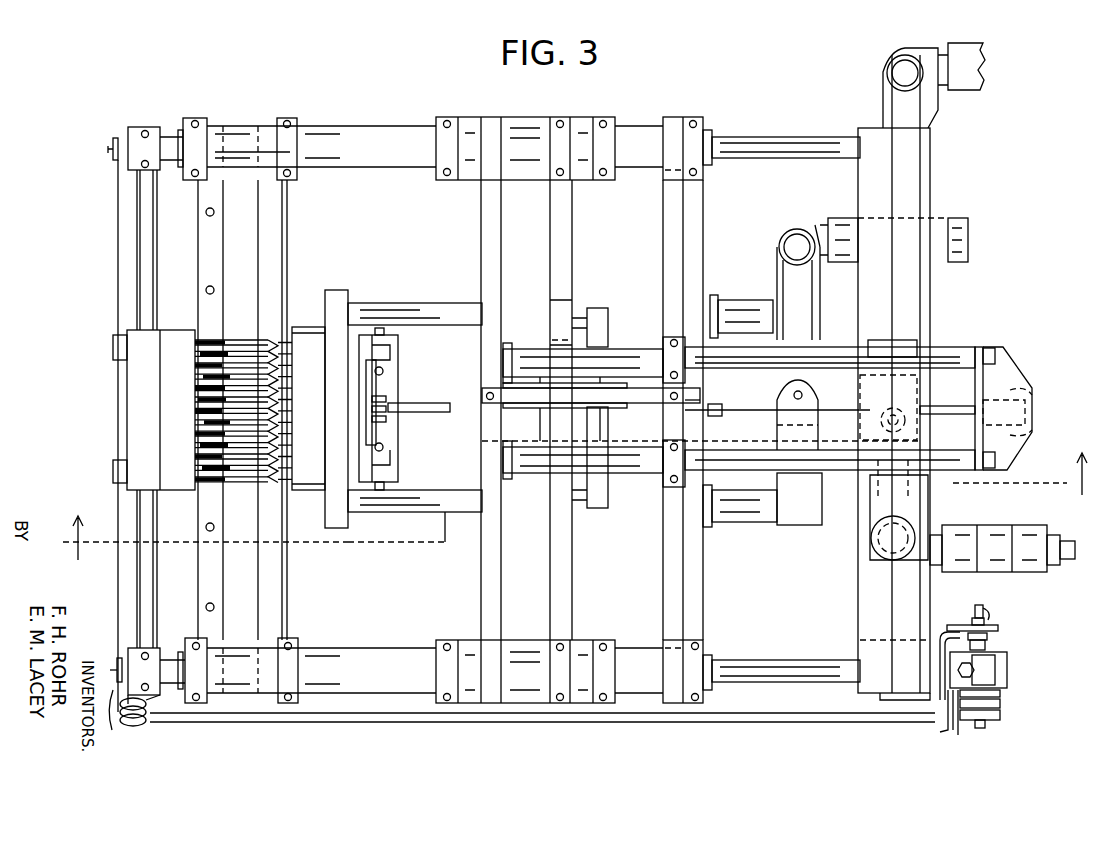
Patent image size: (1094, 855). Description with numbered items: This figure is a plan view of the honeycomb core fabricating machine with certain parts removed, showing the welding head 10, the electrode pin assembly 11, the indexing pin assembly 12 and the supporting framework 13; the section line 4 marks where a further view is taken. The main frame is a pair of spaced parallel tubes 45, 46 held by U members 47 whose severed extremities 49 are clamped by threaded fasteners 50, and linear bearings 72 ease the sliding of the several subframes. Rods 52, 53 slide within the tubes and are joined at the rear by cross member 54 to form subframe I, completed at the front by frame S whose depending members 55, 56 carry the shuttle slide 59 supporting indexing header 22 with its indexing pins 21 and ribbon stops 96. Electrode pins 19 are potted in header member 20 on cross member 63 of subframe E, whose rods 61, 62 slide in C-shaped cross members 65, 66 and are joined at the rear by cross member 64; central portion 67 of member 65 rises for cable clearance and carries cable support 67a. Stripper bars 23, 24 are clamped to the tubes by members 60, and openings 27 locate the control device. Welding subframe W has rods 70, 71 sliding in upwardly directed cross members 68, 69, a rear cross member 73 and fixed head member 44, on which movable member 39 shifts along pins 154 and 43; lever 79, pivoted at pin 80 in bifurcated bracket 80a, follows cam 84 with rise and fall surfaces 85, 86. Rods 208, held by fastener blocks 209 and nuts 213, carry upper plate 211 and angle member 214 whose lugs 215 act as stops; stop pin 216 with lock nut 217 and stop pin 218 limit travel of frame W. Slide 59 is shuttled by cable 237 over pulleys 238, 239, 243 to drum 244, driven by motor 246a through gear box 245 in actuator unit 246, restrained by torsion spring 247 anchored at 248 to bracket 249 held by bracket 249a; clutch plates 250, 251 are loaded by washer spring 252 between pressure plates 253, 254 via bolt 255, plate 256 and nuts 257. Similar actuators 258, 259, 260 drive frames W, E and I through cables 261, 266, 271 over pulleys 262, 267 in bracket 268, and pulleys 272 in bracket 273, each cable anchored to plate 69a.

The section line 4- 4 is at (574, 518).
The welding wheel assembly 10 is at (362, 328).
The electrode pin assembly 11 is at (312, 500).
The indexing pin assembly 12 is at (188, 497).
The supporting framework 13 is at (385, 122).
The electrode pins 19 is at (272, 370).
The header member 20 is at (293, 327).
The indexing pins 21 is at (258, 405).
The header member 22 is at (170, 330).
The stripper bar 23 is at (287, 576).
The stripper bar 24 is at (223, 572).
The openings 27 is at (208, 604).
The movable support member 39 is at (345, 448).
The pins 43 is at (383, 450).
The fixed head member 44 is at (398, 358).
The tube 45 is at (355, 648).
The tube 46 is at (388, 168).
The U member 47 is at (488, 640).
The severed extremity 49 is at (606, 638).
The threaded fasteners 50 is at (607, 693).
The rod 52 is at (760, 662).
The rod 53 is at (740, 137).
The cross member 54 is at (868, 176).
The depending member 55 is at (128, 652).
The depending member 56 is at (130, 170).
The inverted U member 59 is at (127, 334).
The member 60 is at (290, 638).
The rod 61 is at (532, 520).
The rod 62 is at (436, 304).
The cross member 63 is at (340, 290).
The cross member 64 is at (808, 527).
The cross member 65 is at (572, 225).
The cross member 66 is at (705, 578).
The central portion 67 is at (566, 302).
The support 67a is at (600, 312).
The cross member 68 is at (495, 222).
The cross member 69 is at (665, 200).
The plate 69a is at (668, 412).
The rod 70 is at (726, 452).
The rod 71 is at (722, 356).
The linear bearings 72 is at (183, 172).
The cross member 73 is at (872, 340).
The lever 79 is at (432, 404).
The pivot pin 80 is at (388, 399).
The bifurcated bracket 80a is at (386, 419).
The cam 84 is at (565, 385).
The rise and fall surface 85 is at (622, 385).
The rise and fall surface 86 is at (510, 385).
The ribbon stop 96 is at (216, 362).
The pins 154 is at (384, 492).
The rods 208 is at (925, 470).
The fastener block 209 is at (668, 462).
The upper plate 211 is at (1010, 362).
The nuts 213 is at (987, 348).
The angle member 214 is at (1030, 395).
The extensions or lugs 215 is at (1032, 430).
The stop pin 216 is at (985, 410).
The lock nut 217 is at (927, 412).
The stop pin 218 is at (870, 424).
The cable 237 is at (118, 282).
The pulley 238 is at (112, 146).
The pulley 239 is at (113, 700).
The pulleys 243 is at (142, 722).
The drum 244 is at (985, 730).
The gear box 245 is at (940, 660).
The actuator unit 246 is at (930, 648).
The electric motor 246a is at (975, 526).
The torsion rod spring 247 is at (955, 730).
The spring attachment point 248 is at (940, 684).
The mounting bracket 249 is at (1002, 694).
The bracket 249a is at (922, 705).
The clutch plate 250 is at (1002, 704).
The clutch plate 251 is at (1002, 715).
The washer type spring 252 is at (990, 640).
The pressure plate 253 is at (998, 634).
The pressure plate 254 is at (990, 650).
The bolt 255 is at (978, 608).
The plate 256 is at (990, 626).
The nuts 257 is at (986, 614).
The motor actuator assembly 258 is at (920, 562).
The motor actuator assembly 259 is at (803, 226).
The motor actuator assembly 260 is at (945, 92).
The cable 261 is at (740, 418).
The pulleys 262 is at (872, 445).
The cable 266 is at (792, 262).
The pulleys 267 is at (792, 386).
The bracket 268 is at (790, 462).
The cable 271 is at (893, 148).
The pulleys 272 is at (924, 400).
The bracket 273 is at (925, 425).
The subframe I is at (185, 126).
The rigid rectangular frame S is at (128, 206).
The subframe E is at (365, 522).
The welding subframe W is at (538, 480).